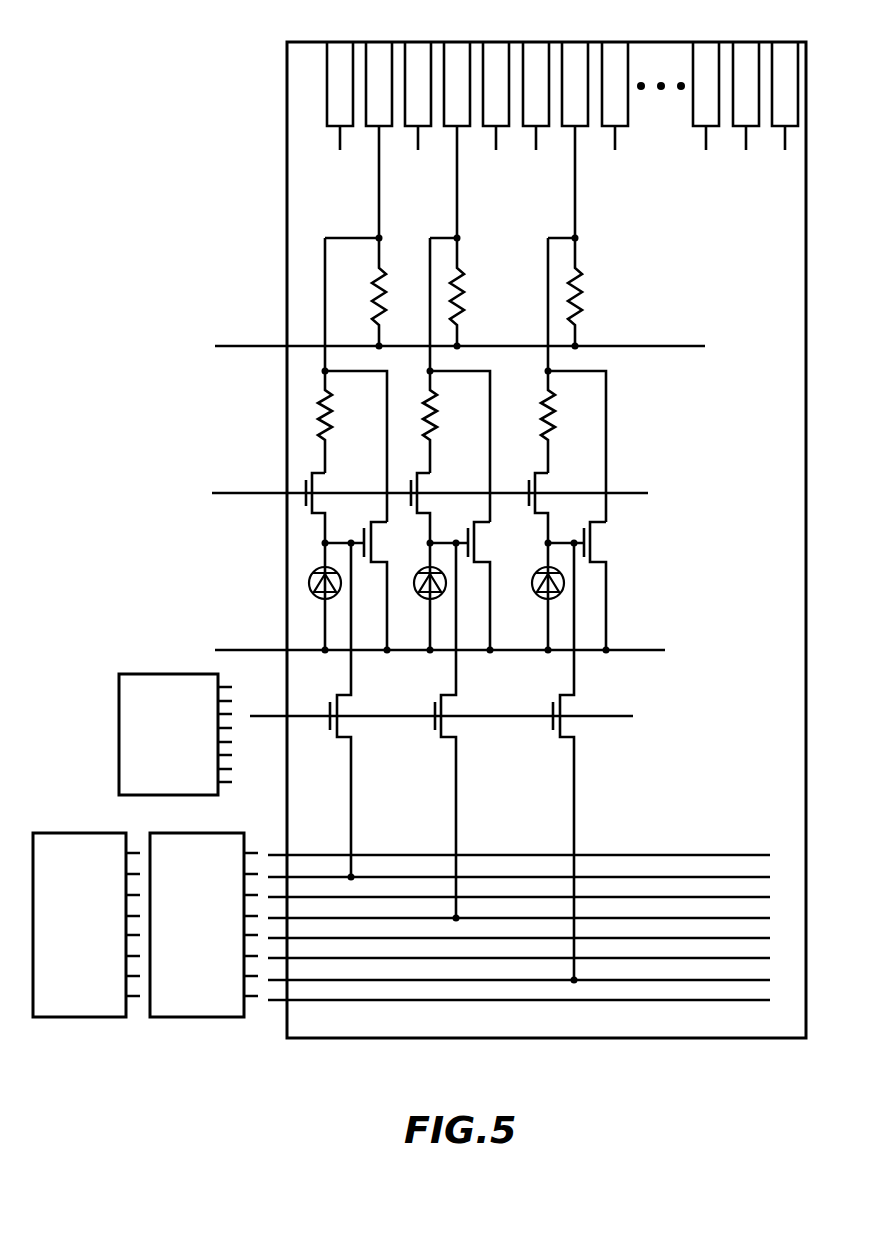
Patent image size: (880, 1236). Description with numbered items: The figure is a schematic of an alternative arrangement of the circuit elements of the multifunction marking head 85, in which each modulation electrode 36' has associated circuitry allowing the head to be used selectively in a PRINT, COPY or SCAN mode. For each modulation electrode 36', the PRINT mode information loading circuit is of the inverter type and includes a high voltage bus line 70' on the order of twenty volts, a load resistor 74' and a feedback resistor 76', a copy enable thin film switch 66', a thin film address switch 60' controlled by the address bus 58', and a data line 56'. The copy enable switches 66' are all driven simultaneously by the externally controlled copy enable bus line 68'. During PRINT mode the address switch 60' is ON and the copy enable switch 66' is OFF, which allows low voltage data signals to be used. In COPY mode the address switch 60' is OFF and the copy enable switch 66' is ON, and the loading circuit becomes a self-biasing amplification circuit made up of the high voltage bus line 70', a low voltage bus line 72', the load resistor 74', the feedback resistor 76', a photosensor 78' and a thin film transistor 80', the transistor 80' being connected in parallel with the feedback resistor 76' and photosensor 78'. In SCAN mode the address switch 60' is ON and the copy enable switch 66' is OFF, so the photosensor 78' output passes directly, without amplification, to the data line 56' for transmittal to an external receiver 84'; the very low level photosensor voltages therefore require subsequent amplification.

The marking head 85 is at (285, 80).
The modulation electrode 36' is at (562, 80).
The load resistor 74' is at (463, 292).
The high voltage bus line 70' is at (458, 353).
The feedback resistor 76' is at (424, 355).
The copy enable bus line 68' is at (425, 475).
The copy enable thin film switch 66' is at (394, 508).
The photosensor 78' is at (427, 596).
The thin film transistor 80' is at (485, 586).
The low voltage bus line 72' is at (440, 620).
The address bus 58' is at (376, 734).
The thin film address switch 60' is at (440, 763).
The data line 56' is at (460, 931).
The external receiver 84' is at (86, 948).